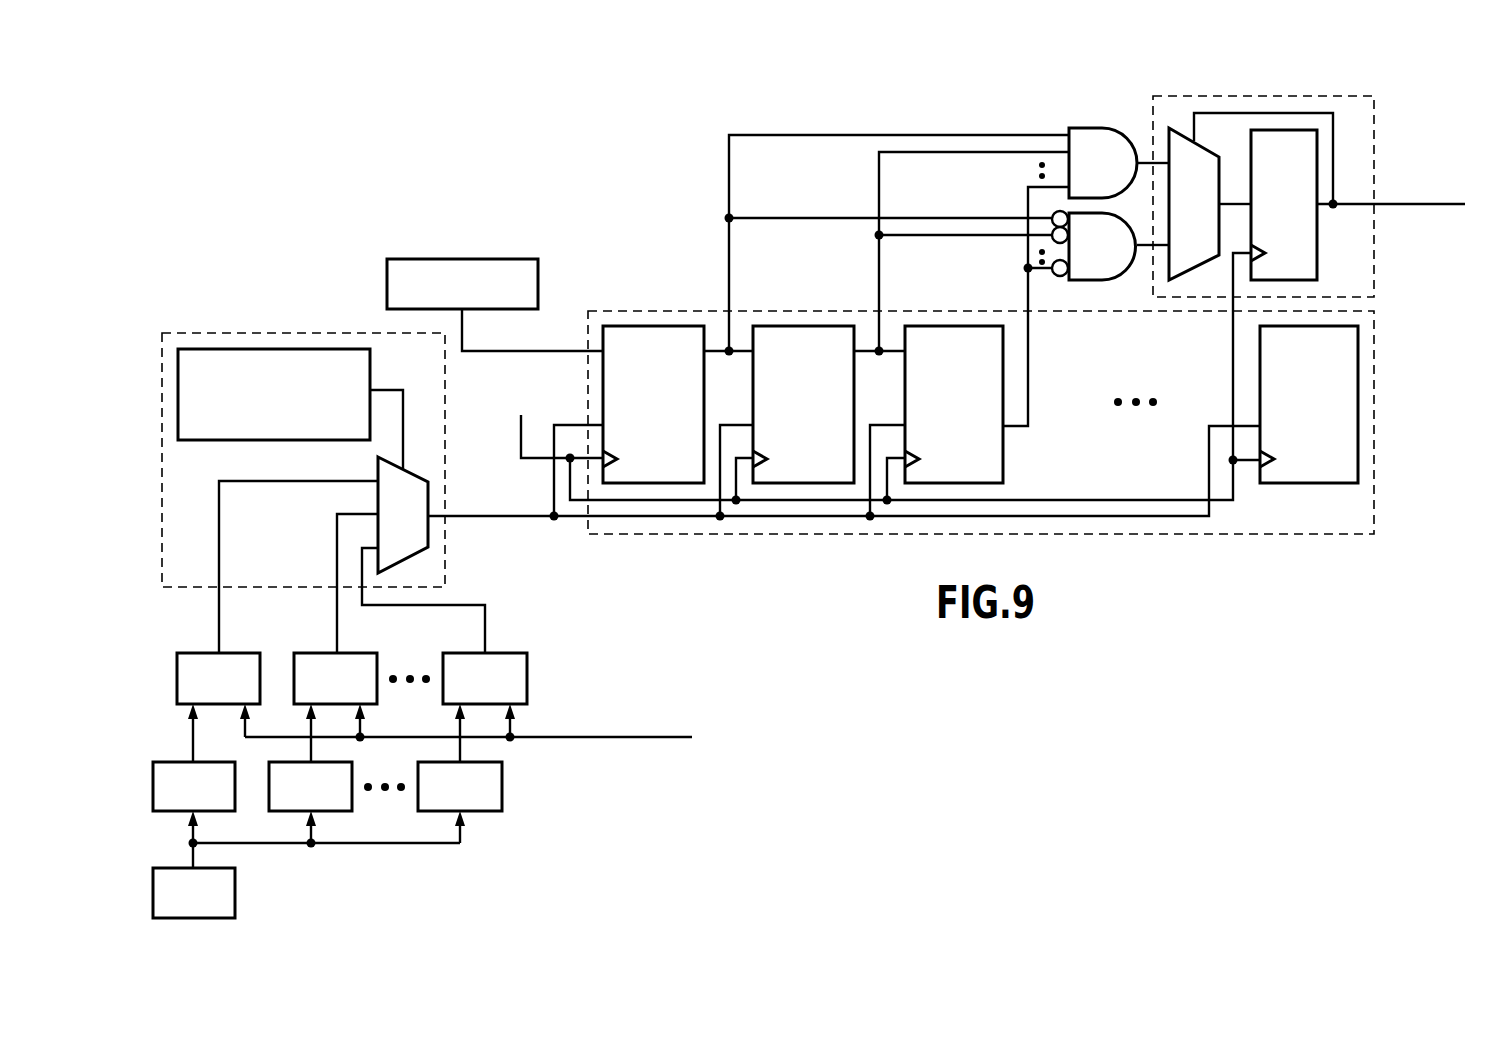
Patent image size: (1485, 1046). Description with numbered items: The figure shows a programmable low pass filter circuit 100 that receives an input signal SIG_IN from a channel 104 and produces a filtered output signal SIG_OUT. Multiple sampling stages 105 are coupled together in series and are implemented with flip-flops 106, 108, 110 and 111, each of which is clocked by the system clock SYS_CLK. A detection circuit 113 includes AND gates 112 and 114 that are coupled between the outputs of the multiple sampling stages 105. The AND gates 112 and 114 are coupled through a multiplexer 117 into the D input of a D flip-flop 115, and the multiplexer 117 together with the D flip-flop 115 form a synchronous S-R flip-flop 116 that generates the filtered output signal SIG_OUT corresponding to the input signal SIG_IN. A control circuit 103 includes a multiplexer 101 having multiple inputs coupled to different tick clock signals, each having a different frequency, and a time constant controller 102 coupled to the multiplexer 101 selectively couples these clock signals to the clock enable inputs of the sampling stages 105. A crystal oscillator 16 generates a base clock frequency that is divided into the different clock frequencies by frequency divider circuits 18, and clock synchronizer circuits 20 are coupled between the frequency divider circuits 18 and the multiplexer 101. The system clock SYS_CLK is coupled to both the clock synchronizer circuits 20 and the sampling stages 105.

The programmable low pass filter circuit 100 is at (268, 112).
The multiplexer 101 is at (428, 530).
The time constant controller 102 is at (205, 349).
The control circuit 103 is at (315, 333).
The channel 104 is at (488, 259).
The sampling stages 105 is at (602, 311).
The flip-flop 106 is at (662, 326).
The flip-flop 108 is at (822, 326).
The flip-flop 110 is at (963, 326).
The flip-flop 111 is at (1358, 426).
The AND gate 112 is at (1095, 280).
The detection circuit 113 is at (1045, 113).
The AND gate 114 is at (1125, 128).
The D flip-flop 115 is at (1352, 250).
The synchronous S-R flip-flop 116 is at (1375, 127).
The multiplexer 117 is at (1198, 280).
The crystal oscillator 16 is at (235, 900).
The frequency divider circuit 18 is at (502, 787).
The clock synchronizer circuits 20 is at (527, 668).